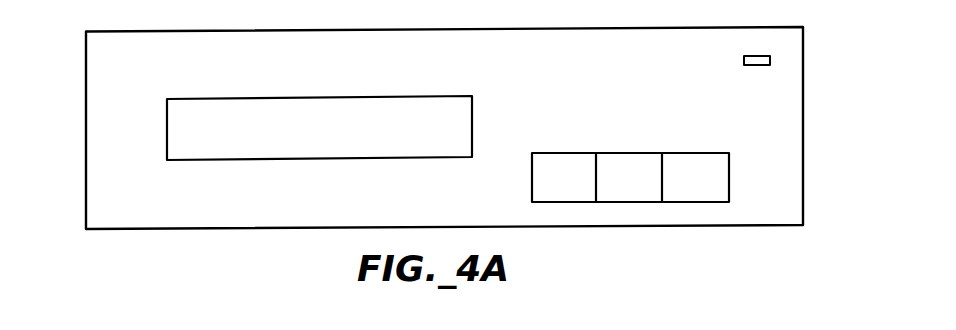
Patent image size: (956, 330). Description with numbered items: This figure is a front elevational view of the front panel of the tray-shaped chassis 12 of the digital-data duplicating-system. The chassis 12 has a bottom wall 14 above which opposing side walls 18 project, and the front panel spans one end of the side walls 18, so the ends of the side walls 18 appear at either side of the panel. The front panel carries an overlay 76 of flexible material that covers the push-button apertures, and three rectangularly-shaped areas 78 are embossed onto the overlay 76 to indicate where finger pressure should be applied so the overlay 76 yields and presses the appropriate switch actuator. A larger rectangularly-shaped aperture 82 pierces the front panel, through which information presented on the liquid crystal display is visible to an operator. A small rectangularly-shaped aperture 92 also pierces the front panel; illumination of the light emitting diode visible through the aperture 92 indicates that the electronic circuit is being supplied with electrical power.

The chassis 12 is at (445, 145).
The bottom wall 14 is at (445, 145).
The side walls 18 is at (86, 133).
The overlay 76 is at (307, 210).
The rectangularly-shaped areas 78 is at (702, 168).
The rectangularly-shaped aperture 82 is at (473, 128).
The rectangularly-shaped aperture 92 is at (757, 65).